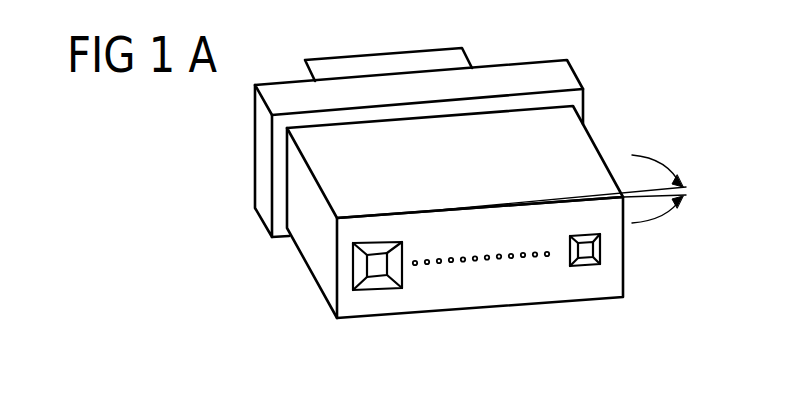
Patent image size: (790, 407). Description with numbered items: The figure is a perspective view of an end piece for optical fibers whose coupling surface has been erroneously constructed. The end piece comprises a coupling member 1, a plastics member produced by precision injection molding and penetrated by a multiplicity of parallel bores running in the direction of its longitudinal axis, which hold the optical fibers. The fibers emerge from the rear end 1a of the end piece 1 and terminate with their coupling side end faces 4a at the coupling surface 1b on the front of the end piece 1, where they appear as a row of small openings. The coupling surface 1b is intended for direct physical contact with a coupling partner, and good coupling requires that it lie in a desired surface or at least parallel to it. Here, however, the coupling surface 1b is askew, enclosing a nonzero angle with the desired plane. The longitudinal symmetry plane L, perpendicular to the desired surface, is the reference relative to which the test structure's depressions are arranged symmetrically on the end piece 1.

The coupling member 1 is at (464, 212).
The rear end 1a is at (419, 124).
The coupling surface 1b is at (518, 228).
The coupling side end faces 4a is at (427, 258).
The longitudinal symmetry plane L is at (393, 80).